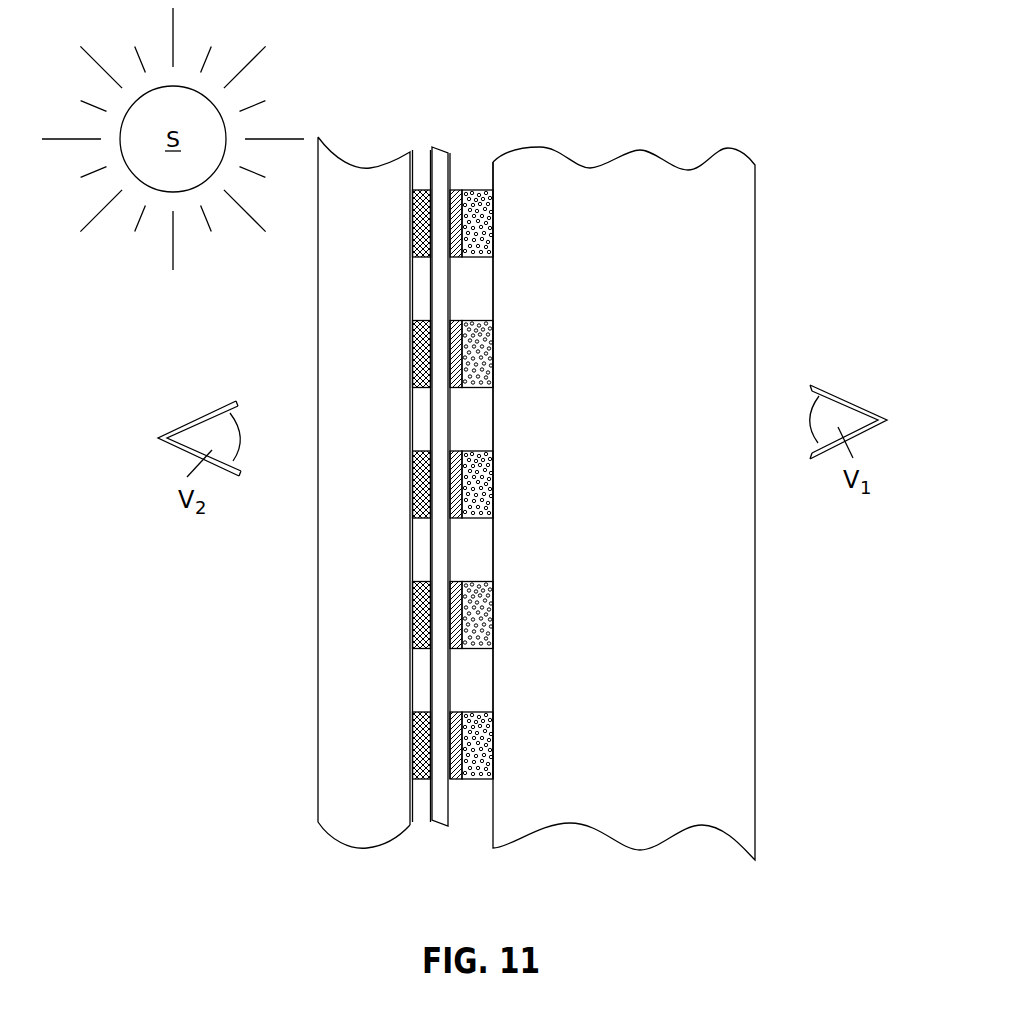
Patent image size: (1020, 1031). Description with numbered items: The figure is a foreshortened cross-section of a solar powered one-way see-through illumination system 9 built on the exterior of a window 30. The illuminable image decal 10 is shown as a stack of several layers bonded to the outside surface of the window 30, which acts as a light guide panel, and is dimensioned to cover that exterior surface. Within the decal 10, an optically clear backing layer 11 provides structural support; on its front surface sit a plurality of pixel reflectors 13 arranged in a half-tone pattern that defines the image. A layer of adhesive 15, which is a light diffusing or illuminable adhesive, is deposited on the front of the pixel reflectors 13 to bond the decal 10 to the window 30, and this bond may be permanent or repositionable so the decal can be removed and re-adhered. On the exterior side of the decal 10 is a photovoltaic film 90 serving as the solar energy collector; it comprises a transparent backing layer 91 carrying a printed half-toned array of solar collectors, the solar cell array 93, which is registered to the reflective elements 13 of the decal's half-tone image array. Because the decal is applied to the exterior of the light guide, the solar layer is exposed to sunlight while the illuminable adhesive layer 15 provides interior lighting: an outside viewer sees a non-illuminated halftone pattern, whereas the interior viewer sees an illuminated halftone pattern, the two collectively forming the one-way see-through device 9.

The solar powered one-way see-through illumination system 9 is at (739, 111).
The illuminable image decal 10 is at (432, 137).
The optically clear backing layer 11 is at (440, 800).
The pixel reflectors 13 is at (460, 778).
The adhesive layer 15 is at (490, 765).
The window 30 is at (641, 780).
The photovoltaic film 90 is at (318, 137).
The transparent backing layer 91 is at (376, 780).
The solar cell array 93 is at (412, 735).